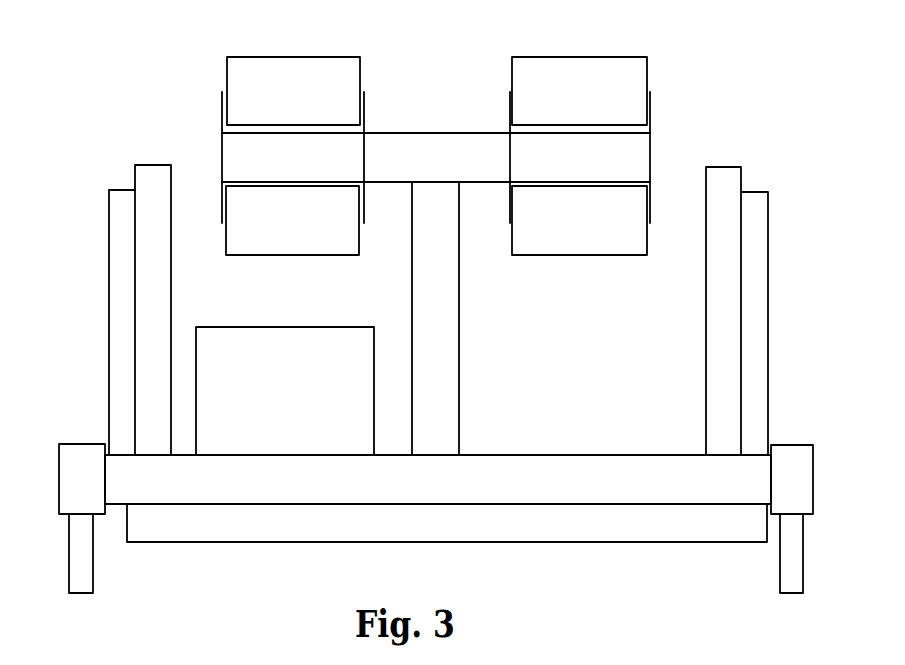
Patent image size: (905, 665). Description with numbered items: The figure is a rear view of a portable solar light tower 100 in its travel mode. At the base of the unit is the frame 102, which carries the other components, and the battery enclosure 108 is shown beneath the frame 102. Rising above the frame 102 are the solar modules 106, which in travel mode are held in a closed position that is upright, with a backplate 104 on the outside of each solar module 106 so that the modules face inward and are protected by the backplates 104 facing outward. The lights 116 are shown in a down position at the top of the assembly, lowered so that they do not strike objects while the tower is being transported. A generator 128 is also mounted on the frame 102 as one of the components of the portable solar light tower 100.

The portable solar light tower 100 is at (111, 30).
The frame 102 is at (629, 462).
The backplate 104 is at (764, 249).
The solar module 106 is at (731, 166).
The battery enclosure/box 108 is at (232, 532).
The lights 116 is at (361, 70).
The generator 128 is at (301, 333).